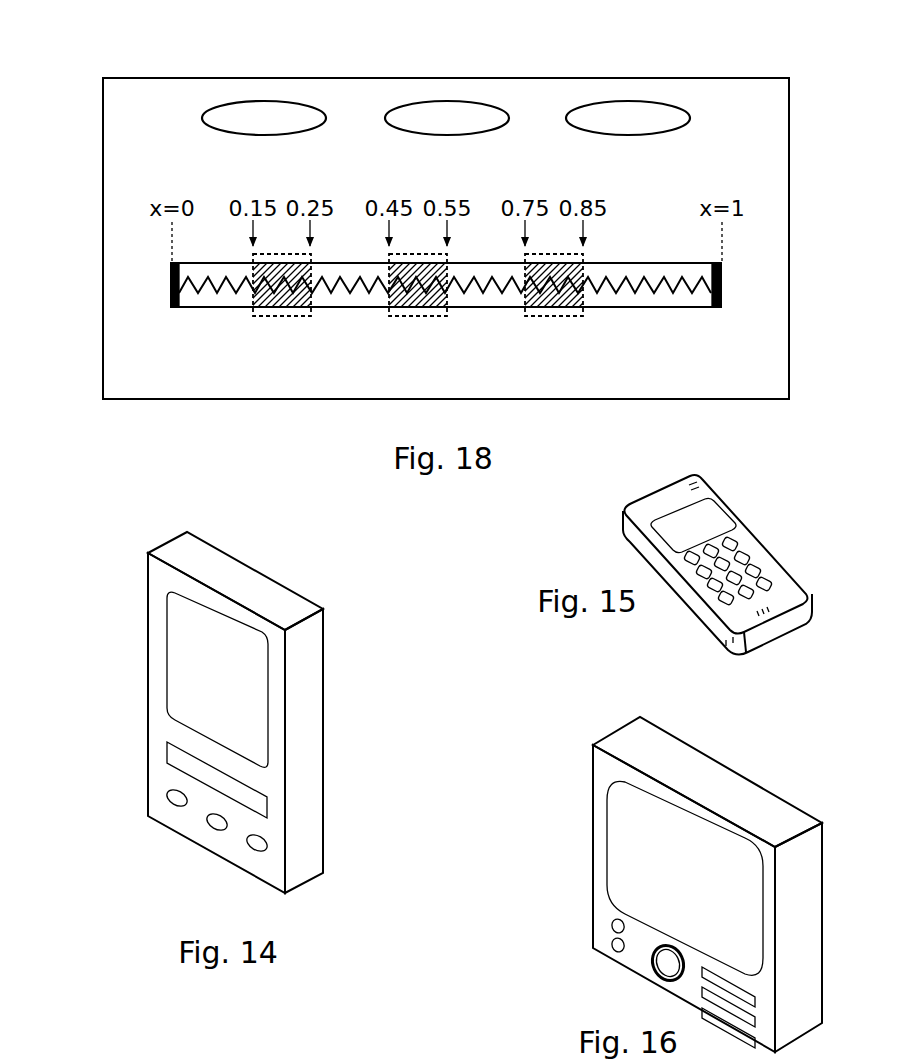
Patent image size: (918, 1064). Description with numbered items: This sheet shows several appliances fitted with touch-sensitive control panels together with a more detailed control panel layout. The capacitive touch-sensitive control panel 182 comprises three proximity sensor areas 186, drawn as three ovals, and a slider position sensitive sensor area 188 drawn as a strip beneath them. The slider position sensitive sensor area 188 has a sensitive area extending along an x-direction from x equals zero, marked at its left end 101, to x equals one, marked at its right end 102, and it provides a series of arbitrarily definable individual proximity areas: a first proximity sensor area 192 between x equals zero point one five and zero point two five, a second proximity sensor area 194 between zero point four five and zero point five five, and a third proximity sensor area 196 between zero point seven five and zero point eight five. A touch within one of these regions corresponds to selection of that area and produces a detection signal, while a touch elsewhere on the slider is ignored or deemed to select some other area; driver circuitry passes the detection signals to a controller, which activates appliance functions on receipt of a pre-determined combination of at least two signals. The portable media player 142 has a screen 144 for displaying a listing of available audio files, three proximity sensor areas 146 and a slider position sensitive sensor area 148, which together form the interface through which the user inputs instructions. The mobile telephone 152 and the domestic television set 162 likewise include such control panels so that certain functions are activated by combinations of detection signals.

In FIG. 18, the capacitive touch-sensitive control panel 182 is at (766, 60).
In FIG. 18, the proximity sensor areas 186 is at (327, 119).
In FIG. 18, the slider position sensitive sensor area 188 is at (657, 300).
In FIG. 18, the left end point x=0 101 is at (175, 307).
In FIG. 18, the right end point x=1 102 is at (721, 307).
In FIG. 18, the first proximity sensor area 192 is at (278, 316).
In FIG. 18, the second proximity sensor area 194 is at (414, 316).
In FIG. 18, the third proximity sensor area 196 is at (550, 316).
In FIG. 14, the portable media player 142 is at (175, 712).
In FIG. 14, the screen 144 is at (240, 690).
In FIG. 14, the slider position sensitive sensor area 148 is at (170, 755).
In FIG. 14, the proximity sensor areas 146 is at (248, 849).
In FIG. 15, the mobile telephone 152 is at (782, 528).
In FIG. 16, the domestic television set 162 is at (572, 860).